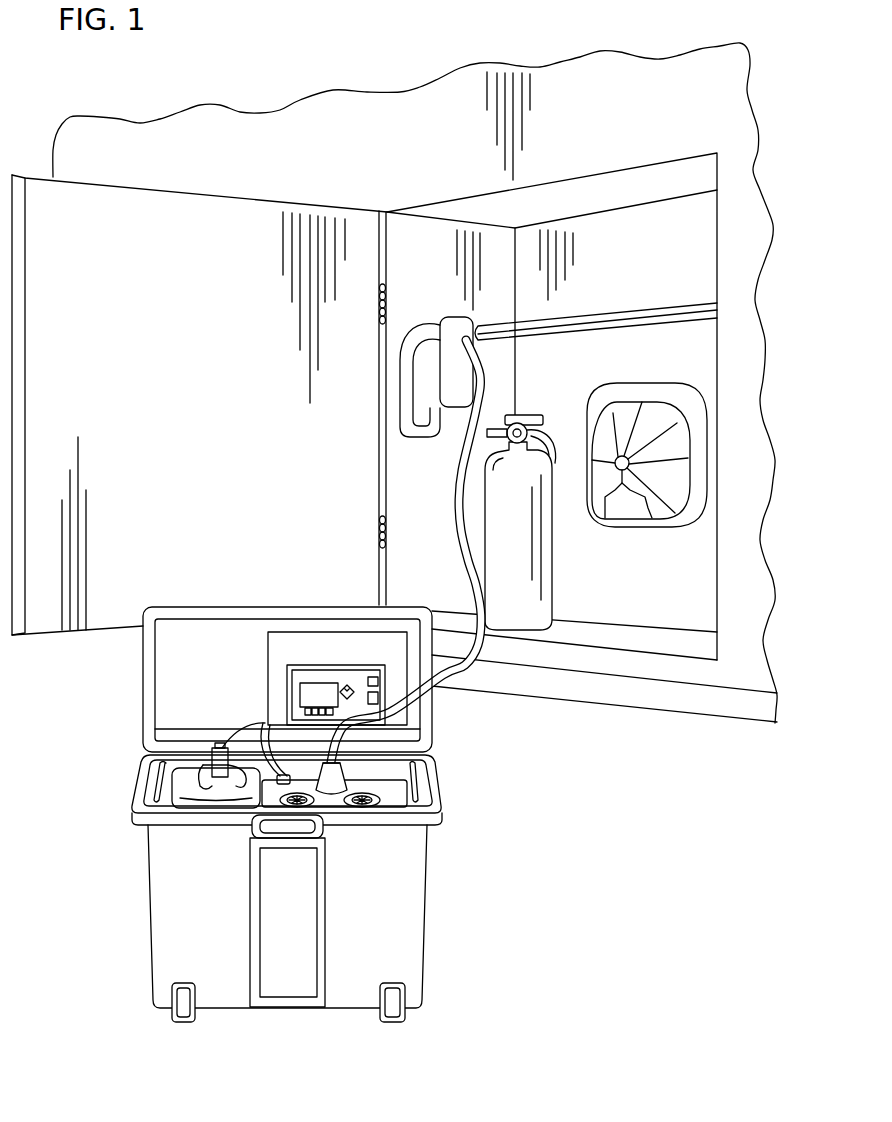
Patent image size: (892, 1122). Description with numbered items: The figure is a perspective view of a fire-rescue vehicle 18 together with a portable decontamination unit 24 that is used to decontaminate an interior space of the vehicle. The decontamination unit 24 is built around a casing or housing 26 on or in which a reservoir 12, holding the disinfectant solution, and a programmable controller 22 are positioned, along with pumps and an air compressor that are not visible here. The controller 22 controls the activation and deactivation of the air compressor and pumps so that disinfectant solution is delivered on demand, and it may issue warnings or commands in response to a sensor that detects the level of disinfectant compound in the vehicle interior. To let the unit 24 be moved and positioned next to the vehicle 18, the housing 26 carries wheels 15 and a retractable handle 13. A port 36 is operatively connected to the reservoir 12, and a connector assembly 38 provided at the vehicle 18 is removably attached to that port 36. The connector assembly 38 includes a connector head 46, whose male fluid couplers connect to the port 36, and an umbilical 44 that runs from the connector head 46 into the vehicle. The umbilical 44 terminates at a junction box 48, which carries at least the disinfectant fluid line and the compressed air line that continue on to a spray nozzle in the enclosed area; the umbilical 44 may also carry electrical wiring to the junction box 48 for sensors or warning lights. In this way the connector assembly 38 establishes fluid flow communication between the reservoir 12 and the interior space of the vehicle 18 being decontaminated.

The reservoir 12 is at (187, 793).
The retractable handle 13 is at (282, 828).
The wheels 15 is at (393, 1018).
The vehicle 18 is at (409, 157).
The programmable controller 22 is at (308, 663).
The decontamination unit 24 is at (279, 849).
The housing 26 is at (210, 936).
The port 36 is at (367, 807).
The connector assembly 38 is at (452, 497).
The umbilical 44 is at (456, 538).
The connector head 46 is at (330, 795).
The junction box 48 is at (457, 373).